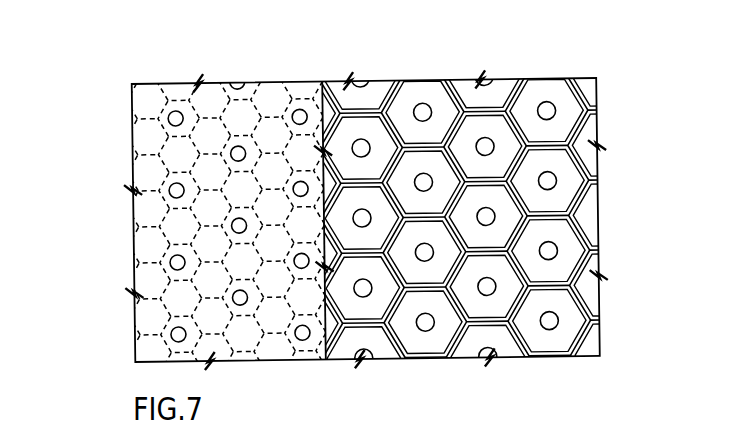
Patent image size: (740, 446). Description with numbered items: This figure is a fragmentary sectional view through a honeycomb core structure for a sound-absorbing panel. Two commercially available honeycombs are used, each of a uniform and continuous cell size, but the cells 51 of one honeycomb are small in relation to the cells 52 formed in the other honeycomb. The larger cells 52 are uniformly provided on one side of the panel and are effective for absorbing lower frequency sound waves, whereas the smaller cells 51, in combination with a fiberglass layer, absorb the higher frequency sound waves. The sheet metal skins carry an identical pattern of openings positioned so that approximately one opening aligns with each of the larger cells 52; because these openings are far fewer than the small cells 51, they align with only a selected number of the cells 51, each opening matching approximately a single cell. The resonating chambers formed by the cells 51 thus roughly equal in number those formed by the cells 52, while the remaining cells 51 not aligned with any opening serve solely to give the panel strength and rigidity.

The cells 51 is at (252, 108).
The cells 52 is at (370, 112).